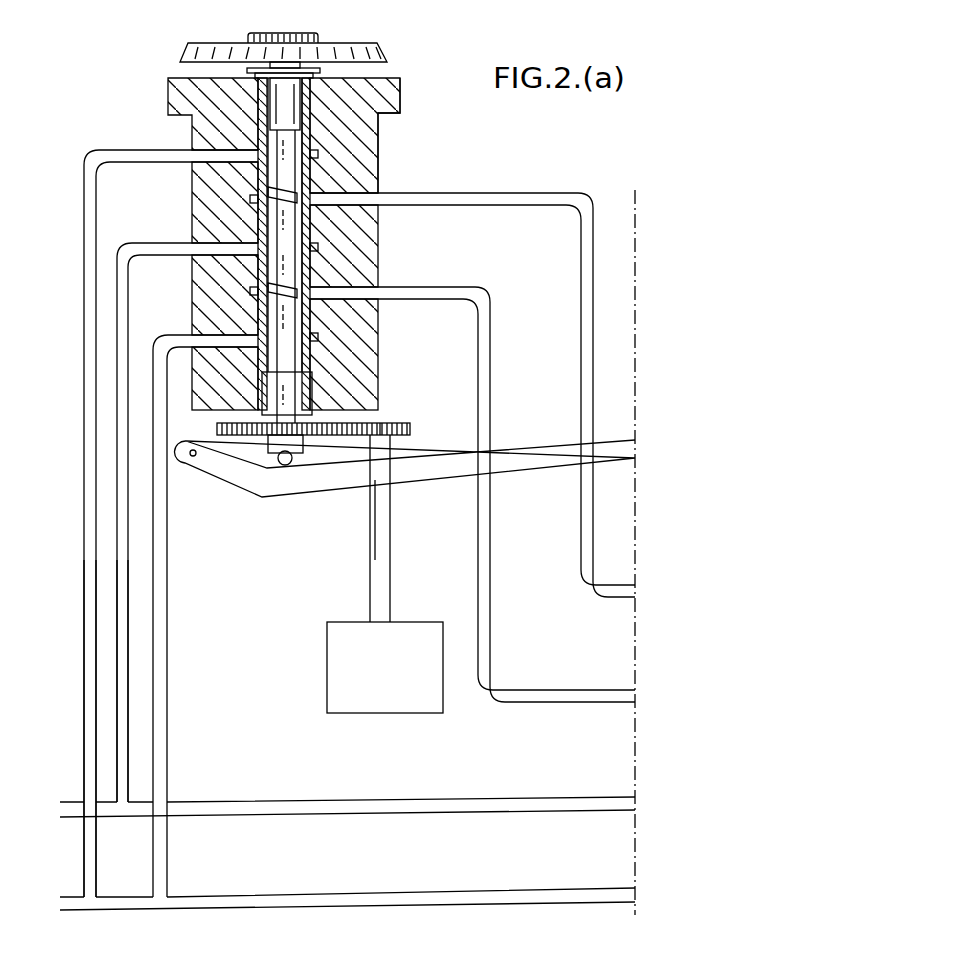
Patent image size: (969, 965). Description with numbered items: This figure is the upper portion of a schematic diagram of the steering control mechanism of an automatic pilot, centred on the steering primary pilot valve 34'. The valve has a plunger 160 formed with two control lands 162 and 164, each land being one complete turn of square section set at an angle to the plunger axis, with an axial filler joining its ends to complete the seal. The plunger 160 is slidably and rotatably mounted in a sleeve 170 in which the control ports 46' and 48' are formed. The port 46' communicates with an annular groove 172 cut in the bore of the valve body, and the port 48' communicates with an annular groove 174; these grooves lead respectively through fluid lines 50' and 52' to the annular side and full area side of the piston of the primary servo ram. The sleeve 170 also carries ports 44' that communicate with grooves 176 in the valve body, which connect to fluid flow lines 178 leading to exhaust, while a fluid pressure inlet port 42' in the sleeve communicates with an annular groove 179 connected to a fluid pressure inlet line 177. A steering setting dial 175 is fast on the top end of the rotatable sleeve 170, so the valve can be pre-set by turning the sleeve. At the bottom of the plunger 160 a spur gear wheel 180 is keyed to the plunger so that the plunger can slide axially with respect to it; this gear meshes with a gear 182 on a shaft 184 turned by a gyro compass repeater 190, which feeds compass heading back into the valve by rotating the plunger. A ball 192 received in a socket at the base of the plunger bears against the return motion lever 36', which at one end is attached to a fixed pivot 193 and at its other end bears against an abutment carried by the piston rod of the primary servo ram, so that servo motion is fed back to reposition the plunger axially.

The steering setting dial 175 is at (342, 50).
The rotatable sleeve 170 is at (288, 103).
The plunger 160 is at (312, 100).
The grooves 176 is at (316, 154).
The primary pilot valve 34' is at (416, 135).
The control land 162 is at (290, 194).
The annular groove 172 is at (252, 199).
The fluid pressure inlet port 42' is at (187, 509).
The annular groove 174 is at (252, 291).
The ports 44' is at (171, 510).
The control port 46' is at (449, 296).
The annular groove 179 is at (318, 247).
The control land 164 is at (296, 290).
The control port 48' is at (398, 353).
The gear 182 is at (398, 426).
The spur gear wheel 180 is at (313, 434).
The fixed pivot 193 is at (193, 457).
The ball 192 is at (287, 466).
The shaft 184 is at (386, 540).
The return motion lever 36' is at (404, 471).
The fluid line 52' is at (556, 561).
The fluid line 50' is at (608, 382).
The gyro compass repeater 190 is at (352, 640).
The fluid pressure inlet line 177 is at (128, 638).
The fluid flow lines 178 is at (185, 692).